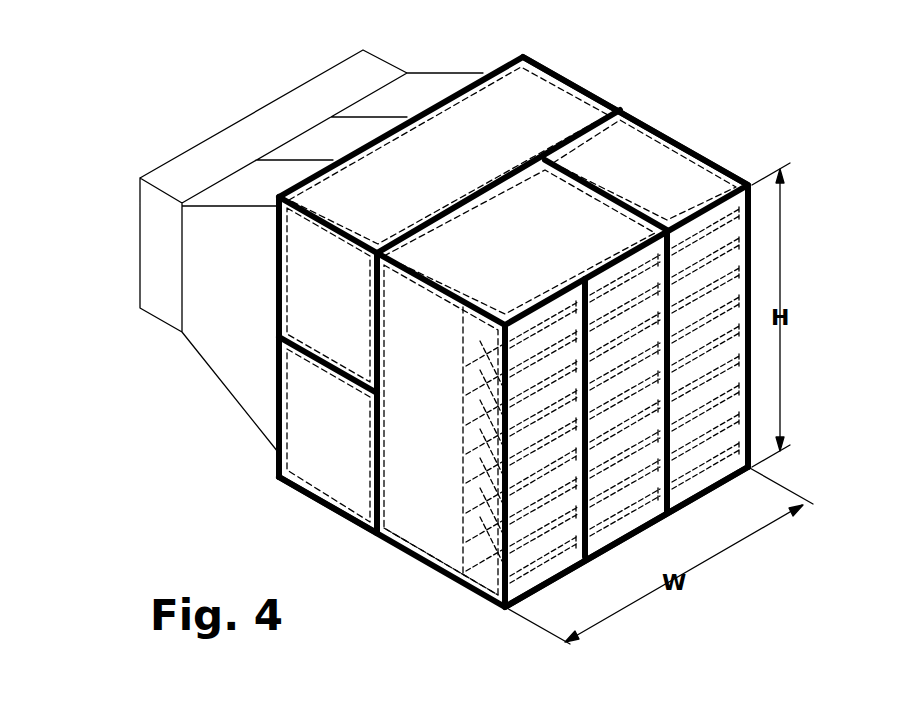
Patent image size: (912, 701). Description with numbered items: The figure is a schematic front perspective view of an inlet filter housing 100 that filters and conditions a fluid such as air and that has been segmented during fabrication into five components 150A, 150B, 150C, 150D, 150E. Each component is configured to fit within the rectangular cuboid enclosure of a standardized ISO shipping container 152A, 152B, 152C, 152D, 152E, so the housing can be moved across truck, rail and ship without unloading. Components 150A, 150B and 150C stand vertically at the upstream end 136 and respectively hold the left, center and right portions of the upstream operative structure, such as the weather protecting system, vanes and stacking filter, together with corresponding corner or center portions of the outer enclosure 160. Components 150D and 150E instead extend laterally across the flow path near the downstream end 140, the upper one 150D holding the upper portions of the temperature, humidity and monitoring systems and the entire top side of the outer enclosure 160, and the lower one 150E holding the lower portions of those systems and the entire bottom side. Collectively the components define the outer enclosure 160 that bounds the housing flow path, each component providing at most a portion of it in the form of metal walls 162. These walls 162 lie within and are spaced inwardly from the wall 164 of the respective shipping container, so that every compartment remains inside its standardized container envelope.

The inlet filter housing 100 is at (136, 116).
The upstream end 136 is at (733, 480).
The downstream end 140 is at (140, 268).
The component 150A is at (427, 518).
The component 150B is at (537, 207).
The component 150C is at (660, 165).
The component 150D is at (300, 268).
The component 150E is at (300, 403).
The ISO shipping container 152A is at (540, 588).
The ISO shipping container 152B is at (513, 173).
The ISO shipping container 152C is at (690, 148).
The ISO shipping container 152D is at (279, 238).
The ISO shipping container 152E is at (278, 445).
The outer enclosure 160 is at (400, 316).
The metal walls 162 is at (442, 540).
The wall 164 is at (333, 500).